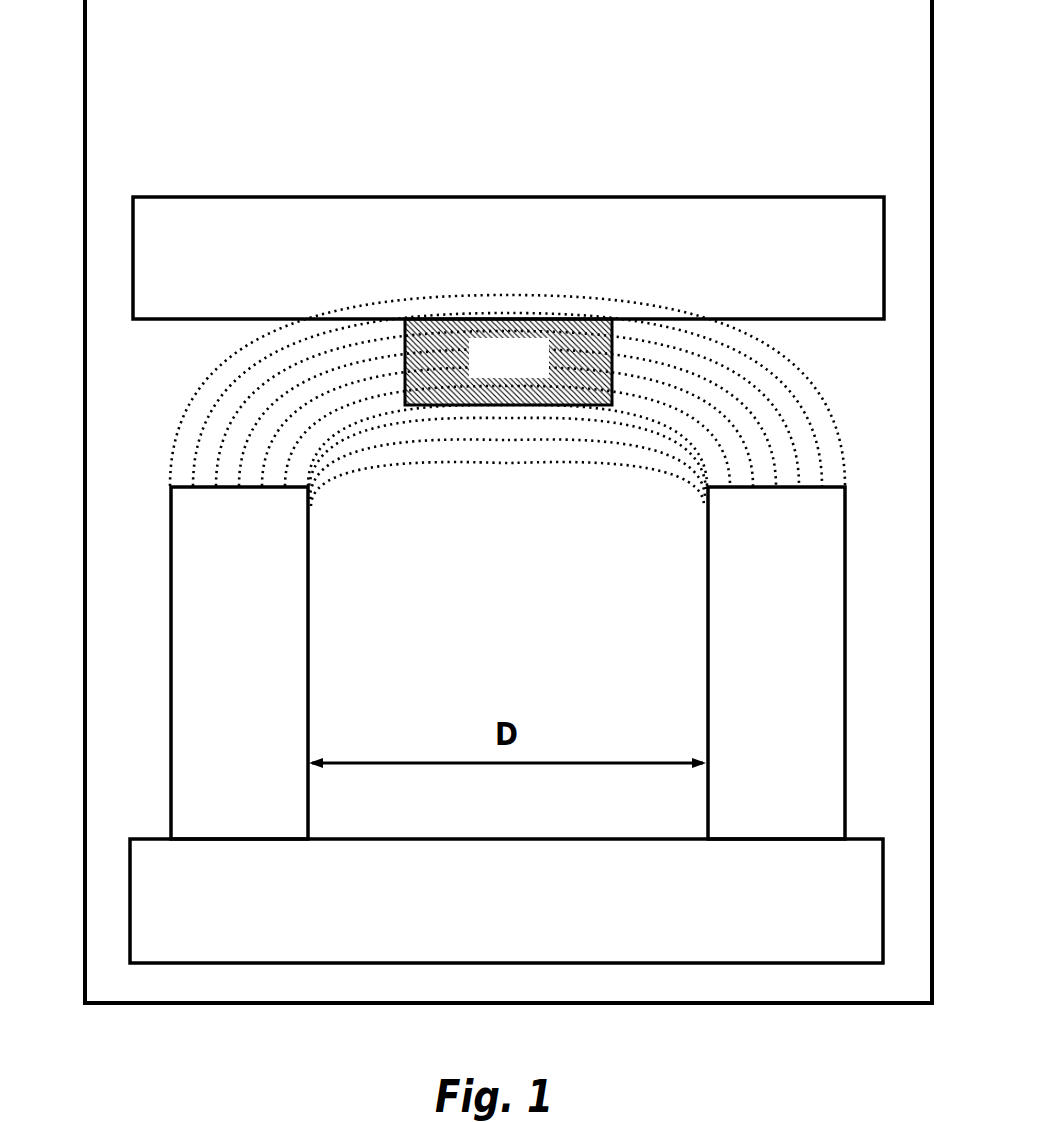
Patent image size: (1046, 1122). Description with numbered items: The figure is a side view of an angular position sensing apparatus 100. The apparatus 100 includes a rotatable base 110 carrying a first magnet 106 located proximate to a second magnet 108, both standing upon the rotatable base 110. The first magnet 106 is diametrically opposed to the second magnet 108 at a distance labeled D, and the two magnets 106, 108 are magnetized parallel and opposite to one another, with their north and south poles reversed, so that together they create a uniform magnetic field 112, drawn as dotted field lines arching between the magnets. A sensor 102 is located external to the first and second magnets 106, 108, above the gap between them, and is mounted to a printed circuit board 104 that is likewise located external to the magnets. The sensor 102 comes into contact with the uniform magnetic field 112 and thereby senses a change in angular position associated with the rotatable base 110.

The angular position sensing apparatus 100 is at (178, 37).
The sensor 102 is at (527, 366).
The printed circuit board (PCB) 104 is at (527, 234).
The first magnet 106 is at (257, 664).
The second magnet 108 is at (796, 664).
The rotatable base 110 is at (527, 950).
The uniform magnetic field 112 is at (446, 473).